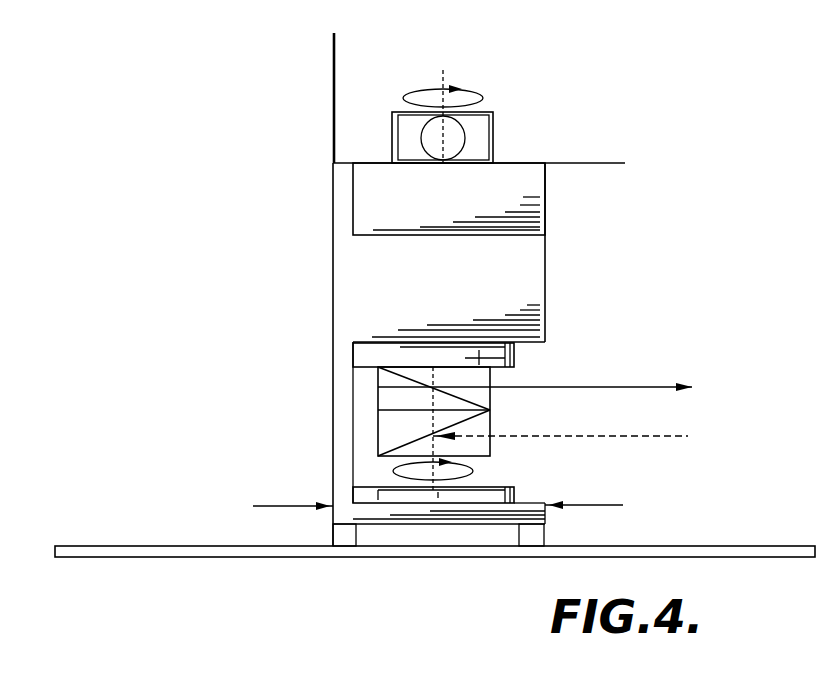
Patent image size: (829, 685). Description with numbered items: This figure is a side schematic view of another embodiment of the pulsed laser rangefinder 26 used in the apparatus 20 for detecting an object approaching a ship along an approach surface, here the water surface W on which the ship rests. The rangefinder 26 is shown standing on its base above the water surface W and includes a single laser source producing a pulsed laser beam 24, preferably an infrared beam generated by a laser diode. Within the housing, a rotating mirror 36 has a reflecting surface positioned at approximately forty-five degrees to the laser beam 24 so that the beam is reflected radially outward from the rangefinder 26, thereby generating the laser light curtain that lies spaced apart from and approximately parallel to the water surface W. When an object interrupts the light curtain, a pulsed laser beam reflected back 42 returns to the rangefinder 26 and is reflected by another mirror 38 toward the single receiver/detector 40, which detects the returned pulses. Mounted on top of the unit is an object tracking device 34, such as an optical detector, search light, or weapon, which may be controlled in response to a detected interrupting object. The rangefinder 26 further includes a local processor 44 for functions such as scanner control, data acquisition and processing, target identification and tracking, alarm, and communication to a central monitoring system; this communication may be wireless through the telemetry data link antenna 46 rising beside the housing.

The apparatus 20 is at (566, 70).
The pulsed laser light beam 24 is at (625, 387).
The pulsed laser rangefinder 26 is at (436, 283).
The object tracking device 34 is at (495, 128).
The rotating mirror 36 is at (378, 387).
The mirror 38 is at (378, 443).
The receiver/detector 40 is at (467, 494).
The pulsed laser beam reflected back 42 is at (653, 436).
The local processor 44 is at (525, 163).
The telemetry data link antenna 46 is at (330, 75).
The water surface W is at (189, 609).